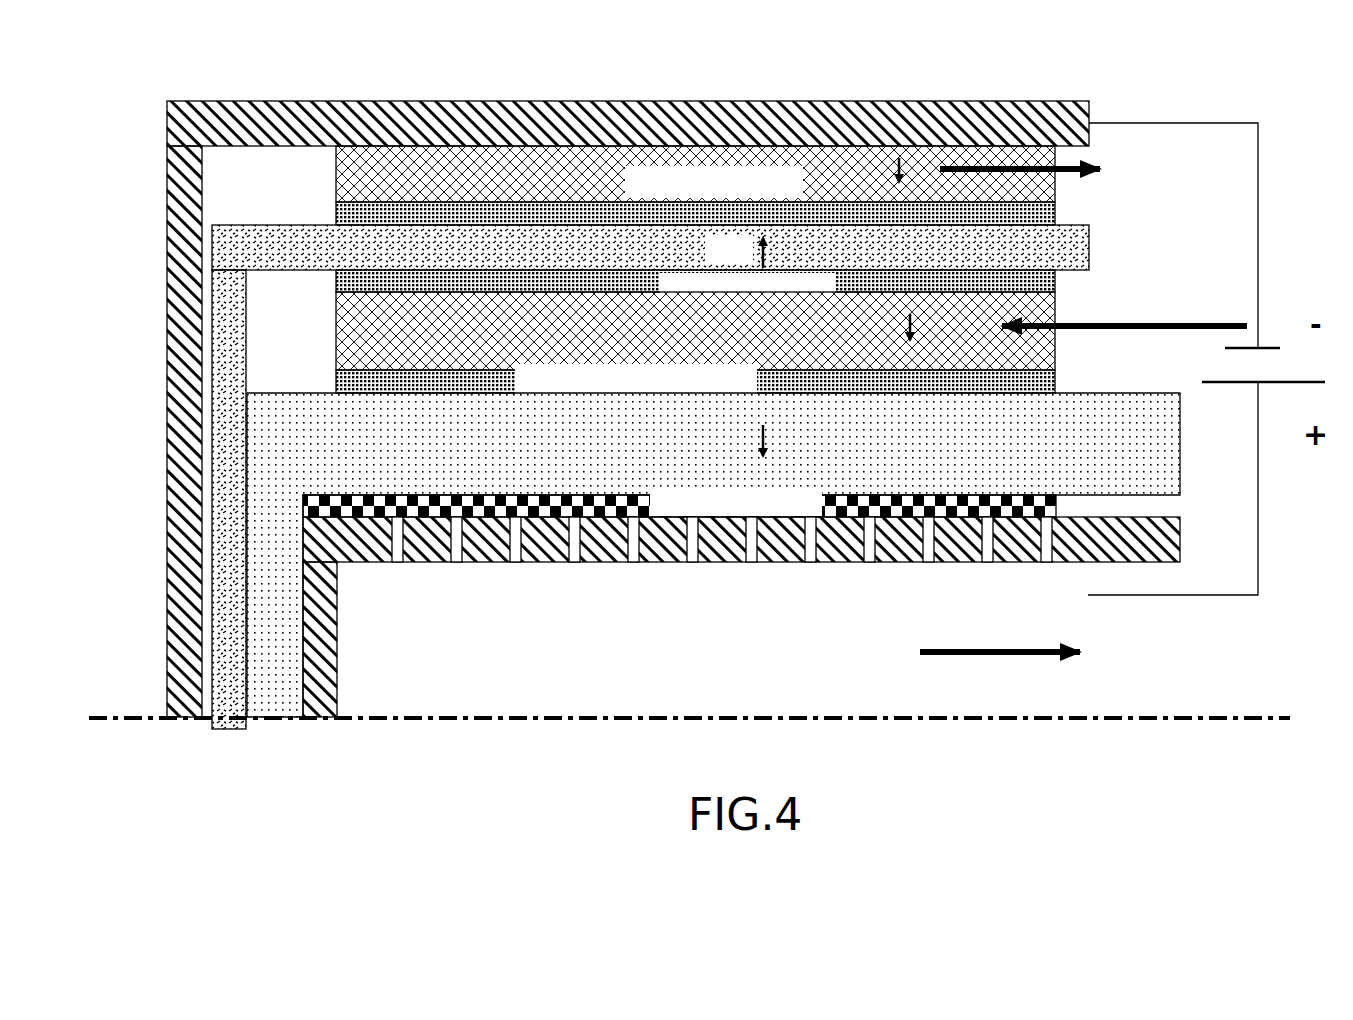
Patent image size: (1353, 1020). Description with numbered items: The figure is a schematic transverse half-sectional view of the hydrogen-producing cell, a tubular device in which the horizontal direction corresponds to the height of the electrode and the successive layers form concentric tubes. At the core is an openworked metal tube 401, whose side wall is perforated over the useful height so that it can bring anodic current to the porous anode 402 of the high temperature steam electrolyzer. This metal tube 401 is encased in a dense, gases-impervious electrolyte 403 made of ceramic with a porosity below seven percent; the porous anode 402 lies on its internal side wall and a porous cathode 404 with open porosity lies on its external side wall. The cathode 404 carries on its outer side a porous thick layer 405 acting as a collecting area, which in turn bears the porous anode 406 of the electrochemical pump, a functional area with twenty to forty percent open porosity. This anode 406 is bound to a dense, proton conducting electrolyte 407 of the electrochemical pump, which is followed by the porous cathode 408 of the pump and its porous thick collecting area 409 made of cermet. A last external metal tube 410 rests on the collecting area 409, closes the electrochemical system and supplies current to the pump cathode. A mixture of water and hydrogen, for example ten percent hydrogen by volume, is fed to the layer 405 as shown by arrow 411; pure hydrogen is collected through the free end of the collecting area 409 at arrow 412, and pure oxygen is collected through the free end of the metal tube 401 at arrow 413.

The metal tube 401 is at (352, 545).
The porous anode of the high temperature steam electrolyzer 402 is at (352, 510).
The dense gases-impervious electrolyte 403 is at (352, 462).
The porous cathode of the high temperature steam electrolyzer 404 is at (352, 388).
The porous thick layer 405 is at (352, 340).
The porous anode of the electrochemical pump 406 is at (352, 280).
The dense gases-impervious electrolyte of the electrochemical pump 407 is at (352, 244).
The porous cathode of the electrochemical pump 408 is at (352, 213).
The porous thick collecting area 409 is at (352, 173).
The external metal tube 410 is at (352, 125).
The arrow 411 is at (1076, 336).
The arrow 412 is at (1085, 158).
The arrow 413 is at (986, 658).